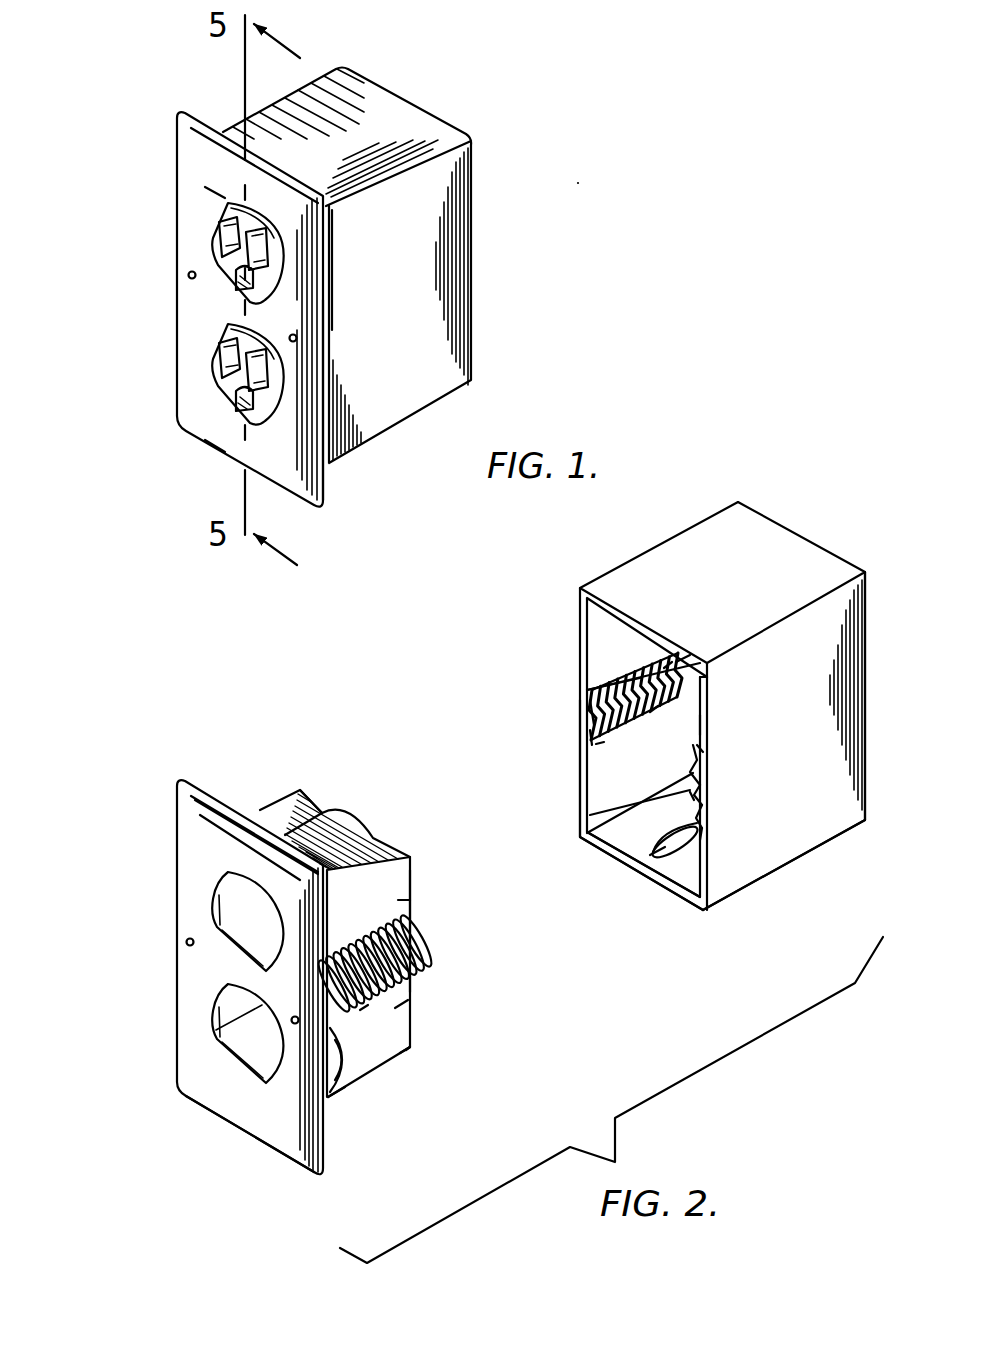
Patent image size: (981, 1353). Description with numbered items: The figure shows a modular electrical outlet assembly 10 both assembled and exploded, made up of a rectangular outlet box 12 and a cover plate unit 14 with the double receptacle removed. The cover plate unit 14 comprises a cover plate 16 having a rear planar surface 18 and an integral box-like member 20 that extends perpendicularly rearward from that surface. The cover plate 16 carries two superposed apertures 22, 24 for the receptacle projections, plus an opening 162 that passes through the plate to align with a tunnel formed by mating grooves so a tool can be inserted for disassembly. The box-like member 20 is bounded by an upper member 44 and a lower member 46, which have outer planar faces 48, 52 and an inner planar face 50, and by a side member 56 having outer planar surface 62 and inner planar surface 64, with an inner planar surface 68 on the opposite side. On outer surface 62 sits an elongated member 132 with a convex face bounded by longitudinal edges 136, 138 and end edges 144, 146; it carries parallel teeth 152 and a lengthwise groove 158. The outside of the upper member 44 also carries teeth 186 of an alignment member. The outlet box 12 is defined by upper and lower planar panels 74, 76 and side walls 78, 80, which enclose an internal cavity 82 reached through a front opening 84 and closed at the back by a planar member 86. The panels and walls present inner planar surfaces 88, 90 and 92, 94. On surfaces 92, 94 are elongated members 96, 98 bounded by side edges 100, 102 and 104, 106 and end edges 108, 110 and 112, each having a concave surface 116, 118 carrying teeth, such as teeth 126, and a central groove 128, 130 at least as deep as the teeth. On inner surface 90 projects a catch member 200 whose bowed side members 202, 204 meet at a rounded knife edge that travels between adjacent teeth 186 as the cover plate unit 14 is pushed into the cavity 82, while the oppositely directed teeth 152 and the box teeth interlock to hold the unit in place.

In FIG. 1, the modular electrical outlet assembly 10 is at (580, 182).
In FIG. 1, the outlet box 12 is at (377, 116).
In FIG. 2, the outlet box 12 is at (782, 488).
In FIG. 1, the cover plate unit 14 is at (168, 180).
In FIG. 2, the cover plate unit 14 is at (120, 826).
In FIG. 1, the cover plate 16 is at (293, 454).
In FIG. 2, the cover plate 16 is at (234, 1133).
In FIG. 2, the rear planar surface 18 is at (333, 1143).
In FIG. 2, the box-like member 20 is at (245, 806).
In FIG. 2, the aperture 22 is at (238, 906).
In FIG. 2, the aperture 24 is at (240, 1047).
In FIG. 2, the upper member 44 is at (393, 836).
In FIG. 2, the lower member 46 is at (344, 1095).
In FIG. 2, the outer planar face 48 is at (291, 826).
In FIG. 2, the inner planar face 50 is at (312, 808).
In FIG. 2, the outer planar face 52 is at (413, 1045).
In FIG. 2, the side member 56 is at (400, 1012).
In FIG. 2, the outer planar surface 62 is at (357, 1062).
In FIG. 2, the inner planar surface 64 is at (401, 900).
In FIG. 2, the inner planar surface 68 is at (250, 806).
In FIG. 1, the upper planar panel 74 is at (428, 144).
In FIG. 2, the upper planar panel 74 is at (726, 536).
In FIG. 2, the lower planar panel 76 is at (758, 892).
In FIG. 2, the side wall 78 is at (577, 798).
In FIG. 1, the side wall 80 is at (400, 302).
In FIG. 2, the side wall 80 is at (729, 868).
In FIG. 2, the internal cavity 82 is at (606, 834).
In FIG. 2, the front opening 84 is at (603, 622).
In FIG. 2, the planar member 86 is at (867, 604).
In FIG. 2, the inner planar surface 88 is at (706, 678).
In FIG. 2, the inner planar surface 90 is at (634, 850).
In FIG. 2, the inner planar surface 92 is at (617, 810).
In FIG. 2, the inner planar surface 94 is at (702, 725).
In FIG. 2, the elongated member 96 is at (601, 672).
In FIG. 2, the elongated member 98 is at (693, 768).
In FIG. 2, the side edge 100 is at (665, 659).
In FIG. 2, the side edge 102 is at (593, 743).
In FIG. 2, the side edge 104 is at (702, 830).
In FIG. 2, the side edge 106 is at (702, 750).
In FIG. 2, the end edge 108 is at (590, 700).
In FIG. 2, the end edge 110 is at (686, 660).
In FIG. 2, the end edge 112 is at (705, 800).
In FIG. 2, the concave surface 116 is at (657, 705).
In FIG. 2, the concave surface 118 is at (690, 795).
In FIG. 2, the teeth 126 is at (668, 656).
In FIG. 2, the elongated groove 128 is at (591, 724).
In FIG. 2, the elongated groove 130 is at (705, 778).
In FIG. 2, the elongated member 132 is at (428, 967).
In FIG. 2, the longitudinal edge 136 is at (404, 893).
In FIG. 2, the longitudinal edge 138 is at (364, 1014).
In FIG. 2, the end edge 144 is at (423, 929).
In FIG. 2, the end edge 146 is at (321, 1090).
In FIG. 2, the teeth 152 is at (413, 1047).
In FIG. 2, the groove 158 is at (416, 985).
In FIG. 2, the opening 162 is at (186, 941).
In FIG. 2, the teeth 186 is at (296, 812).
In FIG. 2, the catch member 200 is at (657, 848).
In FIG. 2, the side member 202 is at (668, 842).
In FIG. 2, the side member 204 is at (675, 849).